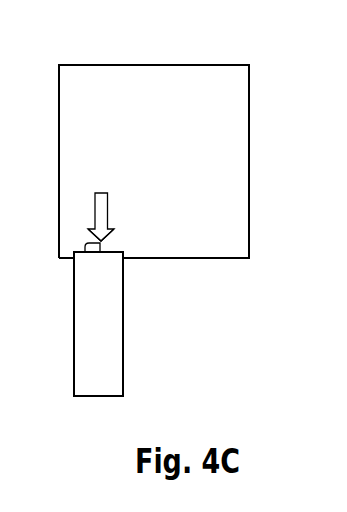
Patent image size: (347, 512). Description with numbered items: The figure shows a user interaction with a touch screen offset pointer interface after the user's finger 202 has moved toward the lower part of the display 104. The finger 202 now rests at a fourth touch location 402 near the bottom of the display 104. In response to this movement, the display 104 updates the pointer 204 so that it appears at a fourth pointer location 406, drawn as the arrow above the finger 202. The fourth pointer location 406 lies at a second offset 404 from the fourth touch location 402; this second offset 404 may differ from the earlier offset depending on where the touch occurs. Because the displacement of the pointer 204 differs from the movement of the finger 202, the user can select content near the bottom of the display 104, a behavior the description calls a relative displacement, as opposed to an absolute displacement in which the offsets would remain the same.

The display 104 is at (147, 65).
The finger 202 is at (118, 383).
The pointer 204 is at (95, 192).
The fourth touch location 402 is at (100, 252).
The second offset 404 is at (83, 246).
The fourth pointer location 406 is at (88, 236).